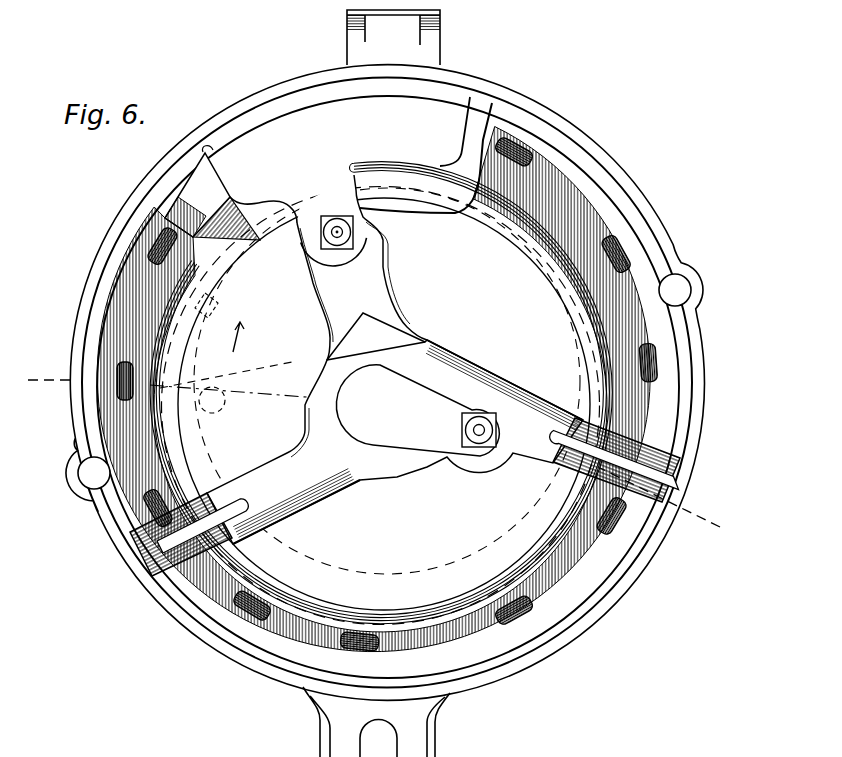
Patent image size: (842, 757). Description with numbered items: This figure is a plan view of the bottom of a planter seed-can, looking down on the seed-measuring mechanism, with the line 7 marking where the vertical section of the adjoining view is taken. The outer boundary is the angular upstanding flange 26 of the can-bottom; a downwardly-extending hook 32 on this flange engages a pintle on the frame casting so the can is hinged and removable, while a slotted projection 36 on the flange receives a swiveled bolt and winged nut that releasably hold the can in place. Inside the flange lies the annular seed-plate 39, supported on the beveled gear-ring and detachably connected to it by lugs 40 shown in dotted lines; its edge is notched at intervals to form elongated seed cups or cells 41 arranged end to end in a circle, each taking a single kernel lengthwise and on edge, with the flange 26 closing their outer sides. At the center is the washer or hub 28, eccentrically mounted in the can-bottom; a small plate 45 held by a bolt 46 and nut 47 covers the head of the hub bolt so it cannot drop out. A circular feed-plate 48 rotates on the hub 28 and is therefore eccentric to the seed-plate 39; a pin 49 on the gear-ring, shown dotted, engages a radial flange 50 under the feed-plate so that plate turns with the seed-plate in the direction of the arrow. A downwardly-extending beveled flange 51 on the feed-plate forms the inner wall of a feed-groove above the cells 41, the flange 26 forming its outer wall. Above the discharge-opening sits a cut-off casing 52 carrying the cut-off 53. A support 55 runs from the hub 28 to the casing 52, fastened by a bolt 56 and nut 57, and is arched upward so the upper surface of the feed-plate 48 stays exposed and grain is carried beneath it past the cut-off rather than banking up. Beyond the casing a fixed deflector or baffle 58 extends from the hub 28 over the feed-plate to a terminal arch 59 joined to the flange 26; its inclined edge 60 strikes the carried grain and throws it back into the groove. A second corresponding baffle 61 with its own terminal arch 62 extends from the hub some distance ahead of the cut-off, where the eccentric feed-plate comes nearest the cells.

The section line 7 7 is at (378, 452).
The angular upstanding flange 26 is at (608, 585).
The washer or hub 28 is at (395, 359).
The downwardly-extending hook 32 is at (436, 24).
The projection 36 is at (422, 727).
The annular seed-plate 39 is at (138, 297).
The lugs 40 is at (233, 322).
The seed cups or cells 41 is at (645, 372).
The small plate 45 is at (417, 410).
The bolt 46 is at (482, 427).
The nut 47 is at (463, 438).
The feed-plate 48 is at (384, 399).
The pin 49 is at (224, 406).
The radial flange 50 is at (325, 375).
The inclined or beveled flange 51 is at (517, 580).
The cut-off casing 52 is at (426, 155).
The cut-off 53 is at (190, 195).
The support 55 is at (378, 291).
The bolt 56 is at (352, 233).
The nut 57 is at (350, 253).
The deflector or baffle 58 is at (510, 393).
The terminal arch 59 is at (678, 470).
The edge of the baffle 60 is at (460, 358).
The second deflector or baffle 61 is at (298, 487).
The terminal arch 62 is at (165, 552).